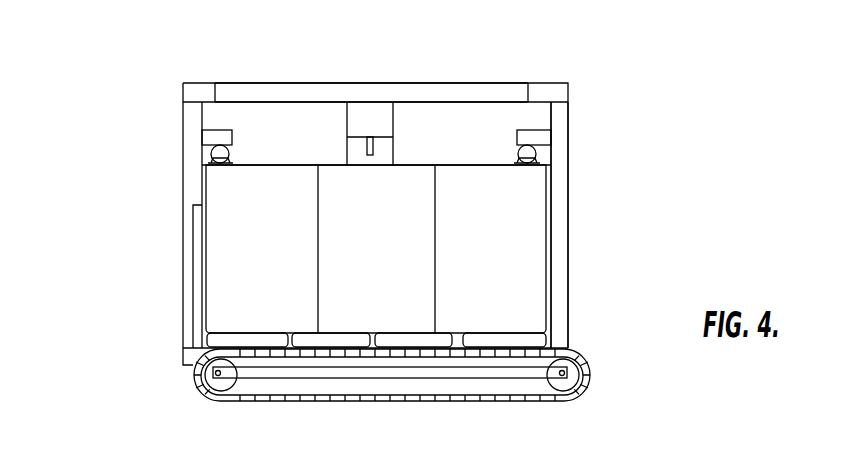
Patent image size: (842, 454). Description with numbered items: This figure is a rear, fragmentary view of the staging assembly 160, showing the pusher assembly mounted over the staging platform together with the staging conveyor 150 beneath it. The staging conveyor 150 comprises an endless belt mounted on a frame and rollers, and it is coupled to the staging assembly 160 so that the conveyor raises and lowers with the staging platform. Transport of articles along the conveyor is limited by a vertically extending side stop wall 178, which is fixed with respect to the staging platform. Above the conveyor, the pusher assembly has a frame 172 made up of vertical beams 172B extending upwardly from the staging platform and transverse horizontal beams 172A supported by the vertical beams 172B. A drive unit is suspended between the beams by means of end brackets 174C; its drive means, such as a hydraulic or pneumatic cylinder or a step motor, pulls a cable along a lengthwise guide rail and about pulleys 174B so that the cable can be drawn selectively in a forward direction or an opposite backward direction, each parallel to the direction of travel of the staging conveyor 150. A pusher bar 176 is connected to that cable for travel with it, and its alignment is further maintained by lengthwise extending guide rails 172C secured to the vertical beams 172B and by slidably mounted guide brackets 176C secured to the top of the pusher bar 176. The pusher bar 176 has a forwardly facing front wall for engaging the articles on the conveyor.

The staging conveyor 150 is at (588, 357).
The staging assembly 160 is at (609, 60).
The frame 172 is at (569, 173).
The transverse horizontal beams 172A is at (293, 92).
The vertical beams 172B is at (560, 312).
The guide rails 172C is at (212, 140).
The pulleys 174B is at (397, 147).
The end brackets 174C is at (373, 118).
The pusher bar 176 is at (525, 243).
The guide brackets 176C is at (235, 155).
The side stop wall 178 is at (202, 275).